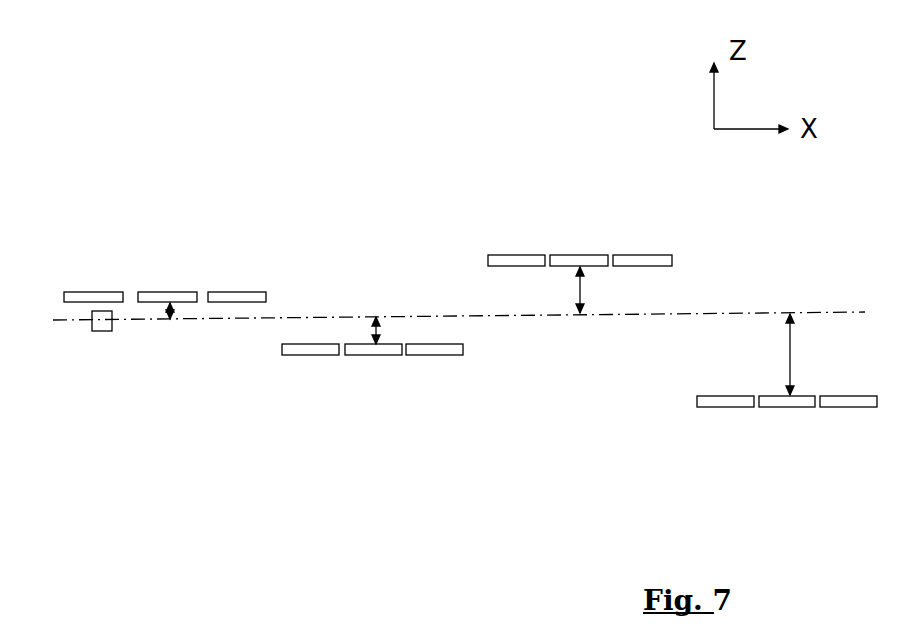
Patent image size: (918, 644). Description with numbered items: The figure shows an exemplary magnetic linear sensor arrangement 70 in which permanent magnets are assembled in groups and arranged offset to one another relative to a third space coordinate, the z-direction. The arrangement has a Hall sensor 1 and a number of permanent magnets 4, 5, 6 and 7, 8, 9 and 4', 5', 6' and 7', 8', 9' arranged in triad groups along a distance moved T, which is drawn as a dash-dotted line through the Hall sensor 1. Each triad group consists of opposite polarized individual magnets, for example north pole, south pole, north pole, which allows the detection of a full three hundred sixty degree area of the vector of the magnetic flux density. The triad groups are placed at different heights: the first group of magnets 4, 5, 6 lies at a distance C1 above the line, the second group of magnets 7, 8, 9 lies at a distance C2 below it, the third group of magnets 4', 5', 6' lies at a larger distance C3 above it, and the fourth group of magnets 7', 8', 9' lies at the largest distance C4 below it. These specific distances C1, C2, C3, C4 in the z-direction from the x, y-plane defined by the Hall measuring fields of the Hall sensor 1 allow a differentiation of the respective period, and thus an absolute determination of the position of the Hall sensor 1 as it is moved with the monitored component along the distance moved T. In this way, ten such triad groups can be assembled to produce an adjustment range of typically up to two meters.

The Hall sensor 1 is at (103, 332).
The permanent magnet 4 is at (93, 263).
The permanent magnet 5 is at (167, 262).
The permanent magnet 6 is at (237, 262).
The permanent magnet 7 is at (310, 386).
The permanent magnet 8 is at (373, 385).
The permanent magnet 9 is at (434, 385).
The permanent magnet 4' is at (516, 220).
The permanent magnet 5' is at (583, 219).
The permanent magnet 6' is at (649, 214).
The permanent magnet 7' is at (725, 444).
The permanent magnet 8' is at (787, 442).
The permanent magnet 9' is at (848, 442).
The distance moved T is at (315, 318).
The distance C1 is at (170, 319).
The distance C2 is at (380, 330).
The distance C3 is at (583, 286).
The distance C4 is at (788, 345).
The arrangement 70 is at (358, 162).